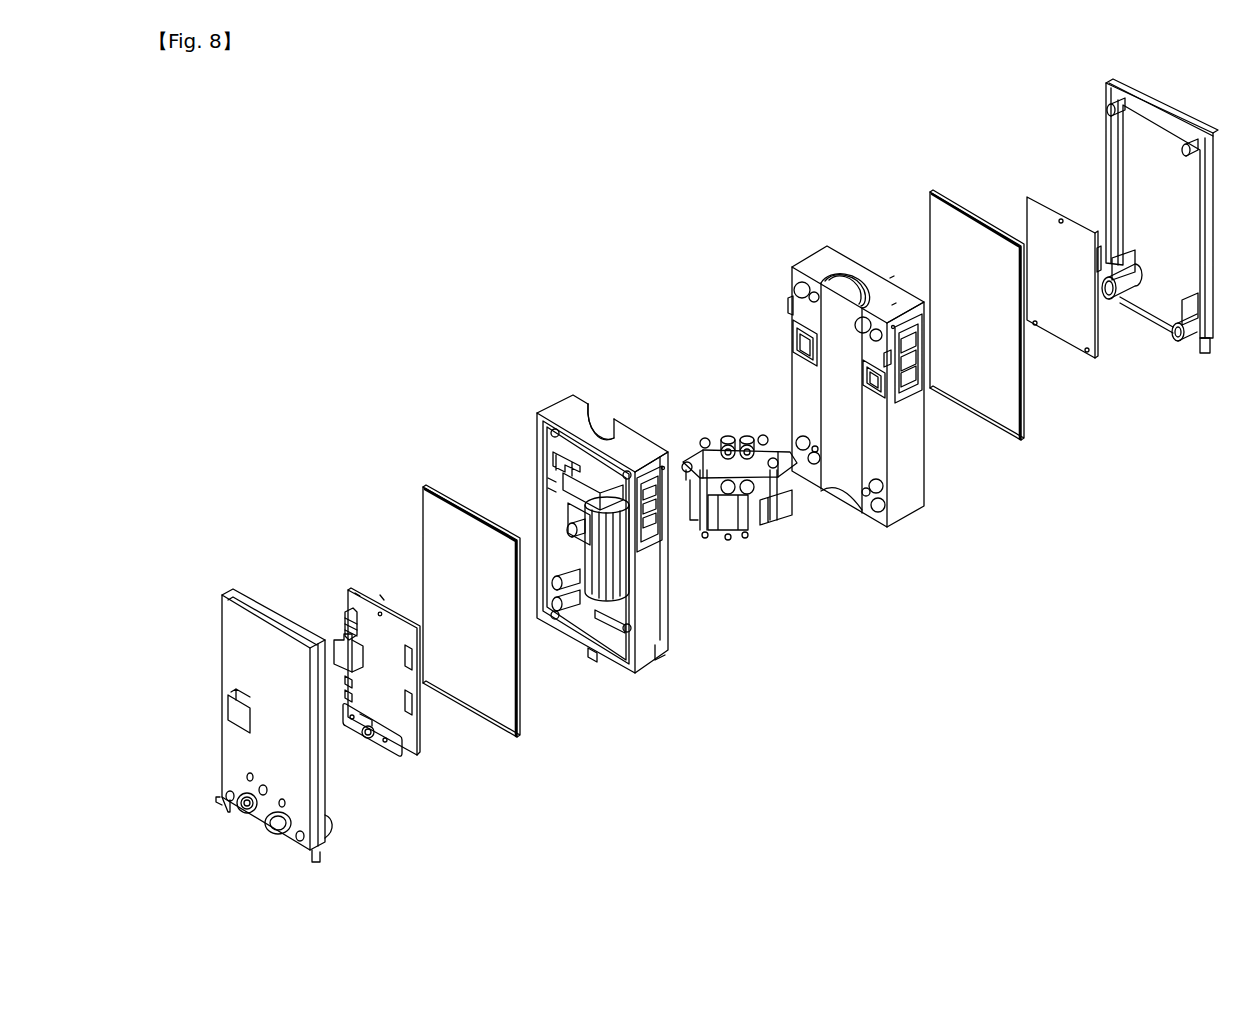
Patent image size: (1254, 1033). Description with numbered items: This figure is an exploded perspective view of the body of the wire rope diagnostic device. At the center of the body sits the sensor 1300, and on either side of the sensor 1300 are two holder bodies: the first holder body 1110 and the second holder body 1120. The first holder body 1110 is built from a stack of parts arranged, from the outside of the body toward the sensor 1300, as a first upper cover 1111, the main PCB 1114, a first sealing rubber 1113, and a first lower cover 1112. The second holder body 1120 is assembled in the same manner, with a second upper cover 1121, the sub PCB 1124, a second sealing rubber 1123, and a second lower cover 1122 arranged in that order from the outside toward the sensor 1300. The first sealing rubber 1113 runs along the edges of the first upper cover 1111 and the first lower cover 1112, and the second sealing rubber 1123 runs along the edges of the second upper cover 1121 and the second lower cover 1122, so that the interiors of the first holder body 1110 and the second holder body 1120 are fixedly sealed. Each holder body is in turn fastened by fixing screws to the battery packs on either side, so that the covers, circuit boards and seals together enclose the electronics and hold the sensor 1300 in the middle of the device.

The first holder body 1110 is at (168, 312).
The first upper cover 1111 is at (232, 652).
The first lower cover 1112 is at (555, 413).
The first sealing rubber 1113 is at (426, 487).
The main PCB 1114 is at (363, 609).
The second holder body 1120 is at (888, 590).
The second upper cover 1121 is at (1213, 330).
The second lower cover 1122 is at (905, 497).
The second sealing rubber 1123 is at (1027, 445).
The sub PCB 1124 is at (1083, 337).
The sensor 1300 is at (710, 424).